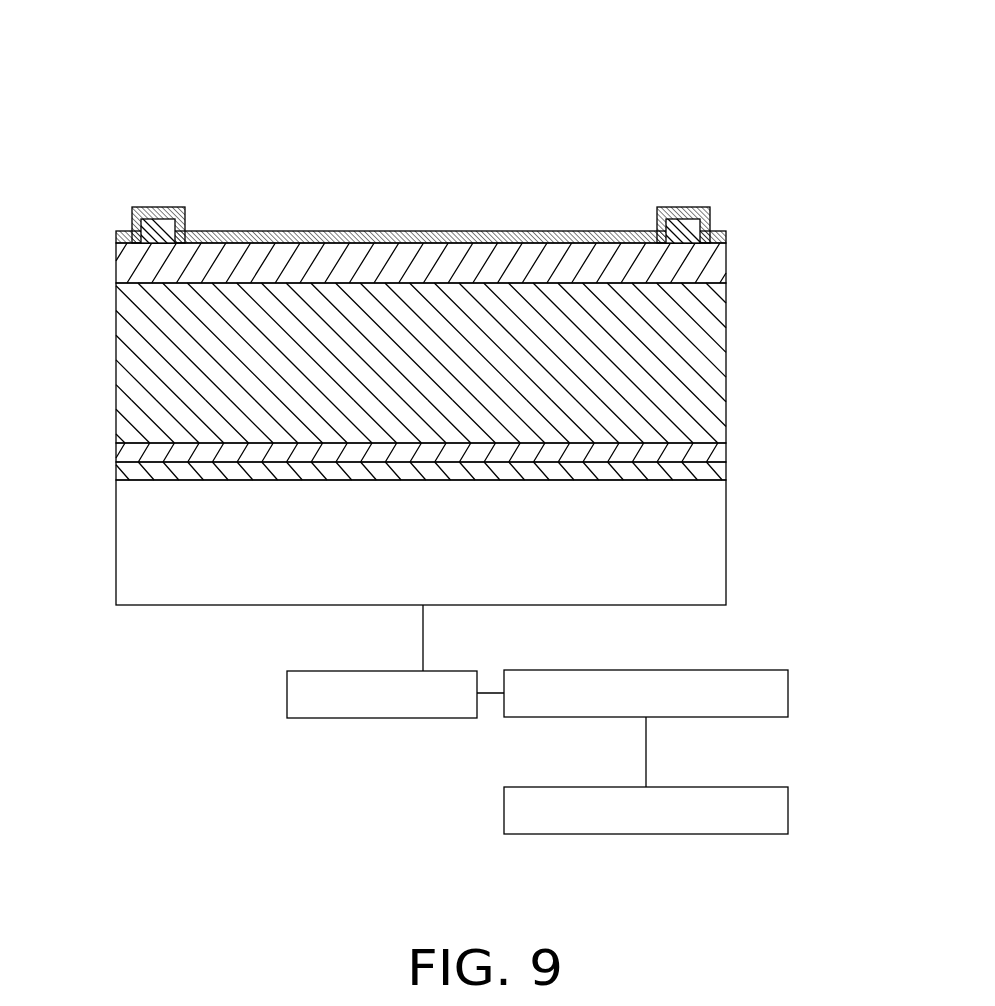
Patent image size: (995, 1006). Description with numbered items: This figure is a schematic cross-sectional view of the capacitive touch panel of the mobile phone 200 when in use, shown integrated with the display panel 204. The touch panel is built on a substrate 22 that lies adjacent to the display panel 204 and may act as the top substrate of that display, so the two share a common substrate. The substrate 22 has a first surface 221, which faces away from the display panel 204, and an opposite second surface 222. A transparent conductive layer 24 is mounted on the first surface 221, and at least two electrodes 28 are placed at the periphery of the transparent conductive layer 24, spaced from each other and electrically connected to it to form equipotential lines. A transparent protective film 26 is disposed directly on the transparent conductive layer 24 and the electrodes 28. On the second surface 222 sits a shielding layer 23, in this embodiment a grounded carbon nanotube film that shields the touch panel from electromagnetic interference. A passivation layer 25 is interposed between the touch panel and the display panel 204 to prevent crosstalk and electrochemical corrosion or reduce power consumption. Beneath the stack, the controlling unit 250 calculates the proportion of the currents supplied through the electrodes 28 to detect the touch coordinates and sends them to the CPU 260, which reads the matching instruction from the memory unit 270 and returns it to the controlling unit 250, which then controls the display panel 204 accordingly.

The mobile phone 200 is at (478, 23).
The electrodes 28 is at (152, 218).
The transparent protective film 26 is at (283, 231).
The transparent conductive layer 24 is at (693, 263).
The substrate 22 is at (705, 377).
The first surface 221 is at (198, 284).
The second surface 222 is at (188, 428).
The shielding layer 23 is at (137, 451).
The passivation layer 25 is at (143, 471).
The display panel 204 is at (177, 567).
The controlling unit 250 is at (288, 694).
The CPU 260 is at (788, 690).
The memory unit 270 is at (788, 808).